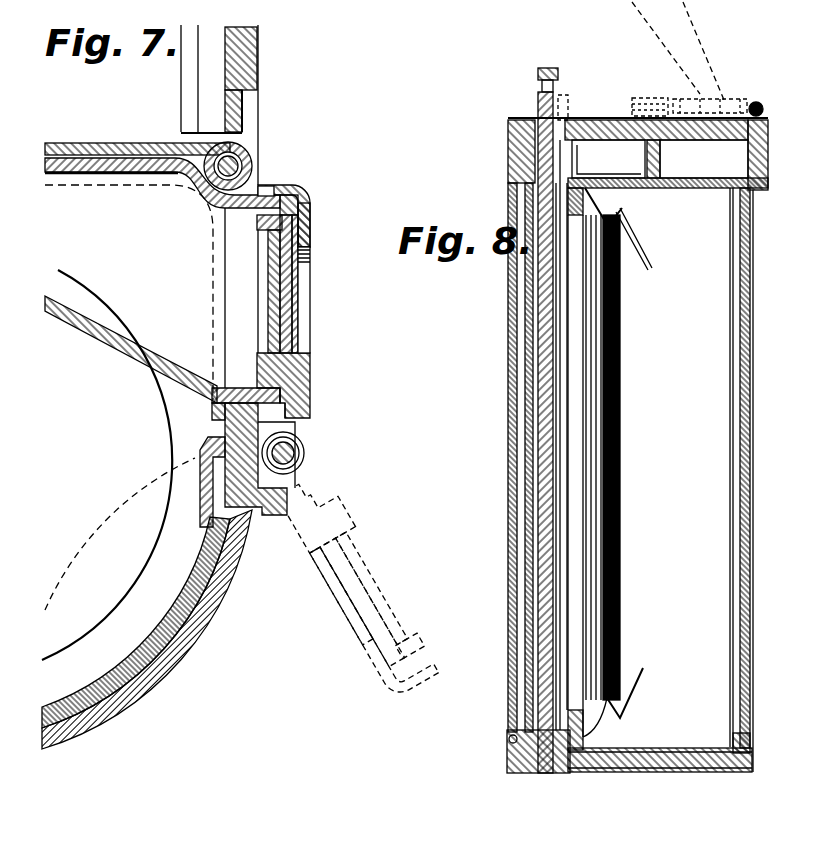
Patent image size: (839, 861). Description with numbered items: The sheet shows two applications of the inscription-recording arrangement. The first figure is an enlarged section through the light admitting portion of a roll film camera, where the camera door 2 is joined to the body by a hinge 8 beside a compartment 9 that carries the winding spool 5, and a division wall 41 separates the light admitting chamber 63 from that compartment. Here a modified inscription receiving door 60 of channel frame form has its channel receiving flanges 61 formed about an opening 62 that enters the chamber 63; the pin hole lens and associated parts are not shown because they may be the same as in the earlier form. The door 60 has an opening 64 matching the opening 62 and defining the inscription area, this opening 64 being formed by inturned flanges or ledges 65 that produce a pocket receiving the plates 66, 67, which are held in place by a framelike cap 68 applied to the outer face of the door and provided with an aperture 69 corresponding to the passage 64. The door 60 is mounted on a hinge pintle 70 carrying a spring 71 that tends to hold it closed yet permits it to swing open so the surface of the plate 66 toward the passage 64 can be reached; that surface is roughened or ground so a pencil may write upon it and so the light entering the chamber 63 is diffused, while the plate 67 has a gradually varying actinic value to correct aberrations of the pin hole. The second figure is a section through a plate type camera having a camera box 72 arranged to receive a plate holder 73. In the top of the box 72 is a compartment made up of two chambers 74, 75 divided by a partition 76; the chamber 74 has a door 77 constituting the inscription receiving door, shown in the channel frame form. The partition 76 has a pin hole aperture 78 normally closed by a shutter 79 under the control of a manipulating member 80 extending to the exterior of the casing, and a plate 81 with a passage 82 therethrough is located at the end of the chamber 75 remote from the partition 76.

In FIG. 7, the door 2 is at (262, 60).
In FIG. 7, the spool 5 is at (118, 588).
In FIG. 7, the hinge 8 is at (252, 180).
In FIG. 7, the compartment 9 is at (80, 673).
In FIG. 7, the division wall 41 is at (100, 342).
In FIG. 7, the door 60 is at (290, 183).
In FIG. 7, the flanges 61 is at (276, 186).
In FIG. 7, the opening 62 is at (240, 293).
In FIG. 7, the chamber 63 is at (79, 224).
In FIG. 7, the opening 64 is at (268, 320).
In FIG. 7, the inturned flanges 65 is at (258, 222).
In FIG. 7, the plate 66 is at (288, 284).
In FIG. 7, the plate 67 is at (298, 312).
In FIG. 7, the framelike cap 68 is at (312, 227).
In FIG. 7, the aperture 69 is at (308, 270).
In FIG. 7, the hinge pintle 70 is at (300, 440).
In FIG. 7, the spring 71 is at (303, 452).
In FIG. 8, the camera box 72 is at (652, 772).
In FIG. 8, the plate holder 73 is at (552, 778).
In FIG. 8, the chamber 74 is at (704, 159).
In FIG. 8, the chamber 75 is at (608, 159).
In FIG. 8, the partition 76 is at (648, 182).
In FIG. 8, the door 77 is at (737, 97).
In FIG. 8, the pin hole aperture 78 is at (647, 163).
In FIG. 8, the shutter 79 is at (662, 182).
In FIG. 8, the manipulating member 80 is at (638, 105).
In FIG. 8, the plate 81 is at (578, 150).
In FIG. 8, the passage 82 is at (576, 174).